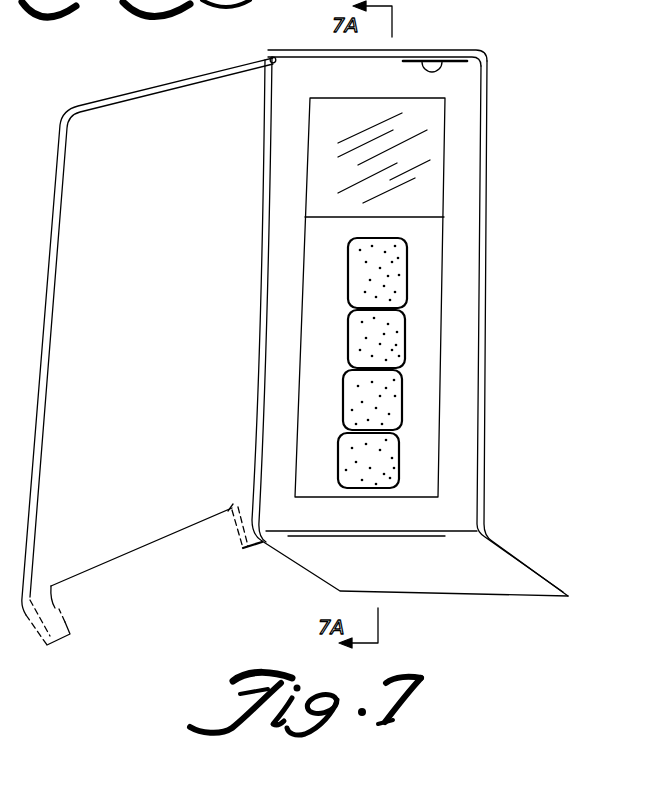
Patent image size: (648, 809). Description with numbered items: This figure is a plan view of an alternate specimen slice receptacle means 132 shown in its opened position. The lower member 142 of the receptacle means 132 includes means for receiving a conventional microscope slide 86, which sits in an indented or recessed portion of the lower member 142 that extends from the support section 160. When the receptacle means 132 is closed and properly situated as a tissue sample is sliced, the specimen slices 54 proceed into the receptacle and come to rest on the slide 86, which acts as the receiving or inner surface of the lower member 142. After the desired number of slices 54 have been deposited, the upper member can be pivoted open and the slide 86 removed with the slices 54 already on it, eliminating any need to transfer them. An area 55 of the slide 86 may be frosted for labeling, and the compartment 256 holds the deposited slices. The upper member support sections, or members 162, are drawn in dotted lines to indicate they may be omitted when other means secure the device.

The specimen slices 54 is at (348, 265).
The area of slide 55 is at (315, 190).
The slide 86 is at (443, 98).
The specimen slice receptacle means 132 is at (459, 40).
The lower member 142 is at (485, 243).
The support section 160 is at (431, 583).
The members 162 is at (60, 609).
The display compartment 256 is at (315, 243).